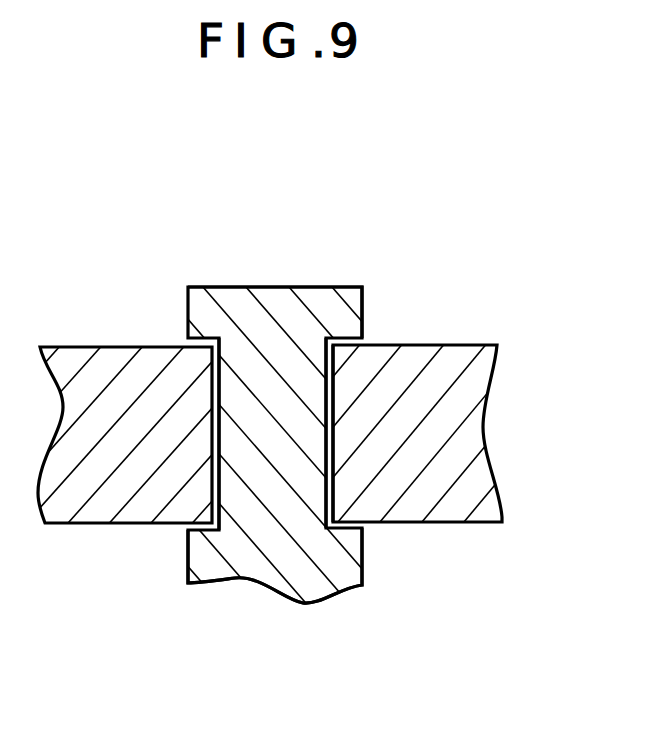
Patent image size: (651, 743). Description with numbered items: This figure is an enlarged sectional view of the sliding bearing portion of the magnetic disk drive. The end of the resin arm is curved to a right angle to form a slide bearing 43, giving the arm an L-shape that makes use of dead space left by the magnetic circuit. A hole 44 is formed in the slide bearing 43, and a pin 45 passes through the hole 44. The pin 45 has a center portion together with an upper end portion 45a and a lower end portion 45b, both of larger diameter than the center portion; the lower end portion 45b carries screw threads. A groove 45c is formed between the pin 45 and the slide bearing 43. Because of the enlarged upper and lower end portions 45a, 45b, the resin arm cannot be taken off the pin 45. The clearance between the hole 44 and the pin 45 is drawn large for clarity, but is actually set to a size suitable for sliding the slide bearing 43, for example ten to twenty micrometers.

The slide bearing 43 is at (430, 357).
The hole 44 is at (326, 492).
The pin 45 is at (218, 287).
The upper end portion 45a is at (303, 317).
The lower end portion 45b is at (332, 580).
The groove 45c is at (203, 517).